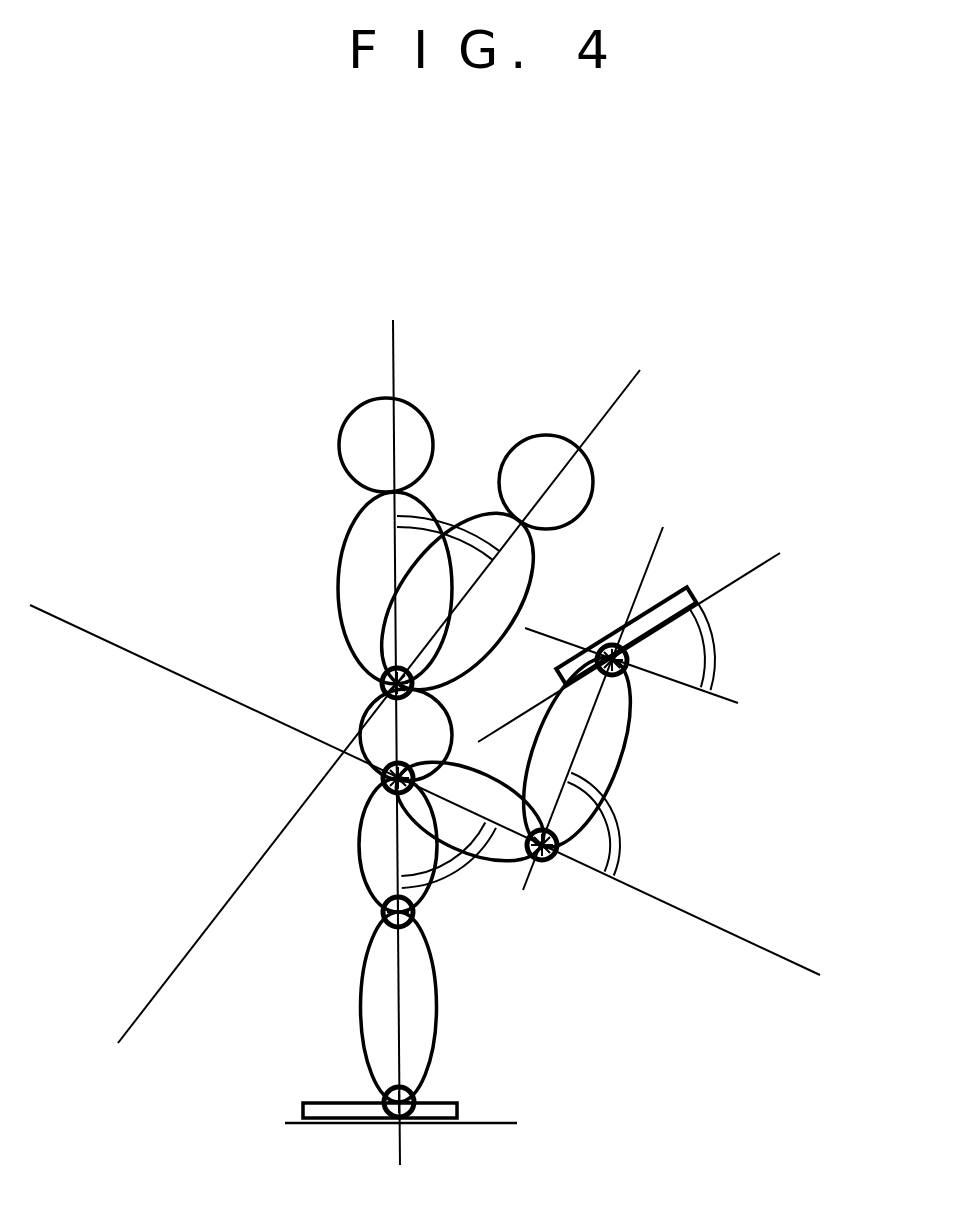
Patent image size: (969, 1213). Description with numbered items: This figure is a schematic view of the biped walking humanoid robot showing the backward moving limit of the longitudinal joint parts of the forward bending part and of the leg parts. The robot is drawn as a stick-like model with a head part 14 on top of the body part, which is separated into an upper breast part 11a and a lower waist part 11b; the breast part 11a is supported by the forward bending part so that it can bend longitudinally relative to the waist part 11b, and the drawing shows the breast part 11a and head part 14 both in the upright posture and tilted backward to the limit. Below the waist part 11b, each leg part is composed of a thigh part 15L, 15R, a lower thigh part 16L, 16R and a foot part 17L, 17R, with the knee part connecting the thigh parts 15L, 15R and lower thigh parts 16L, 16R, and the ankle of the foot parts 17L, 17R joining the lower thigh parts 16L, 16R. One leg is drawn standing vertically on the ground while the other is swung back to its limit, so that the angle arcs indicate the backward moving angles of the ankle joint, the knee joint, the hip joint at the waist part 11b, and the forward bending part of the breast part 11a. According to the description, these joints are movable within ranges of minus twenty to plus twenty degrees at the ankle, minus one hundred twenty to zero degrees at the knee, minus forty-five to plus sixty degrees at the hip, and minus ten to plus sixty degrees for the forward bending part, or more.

The head part 14 is at (350, 412).
The breast part 11a is at (338, 556).
The waist part 11b is at (373, 700).
The thigh part 15L is at (358, 842).
The thigh part 15R is at (490, 867).
The lower thigh part 16L is at (357, 1007).
The lower thigh part 16R is at (632, 737).
The foot part 17L is at (440, 1100).
The foot part 17R is at (665, 592).